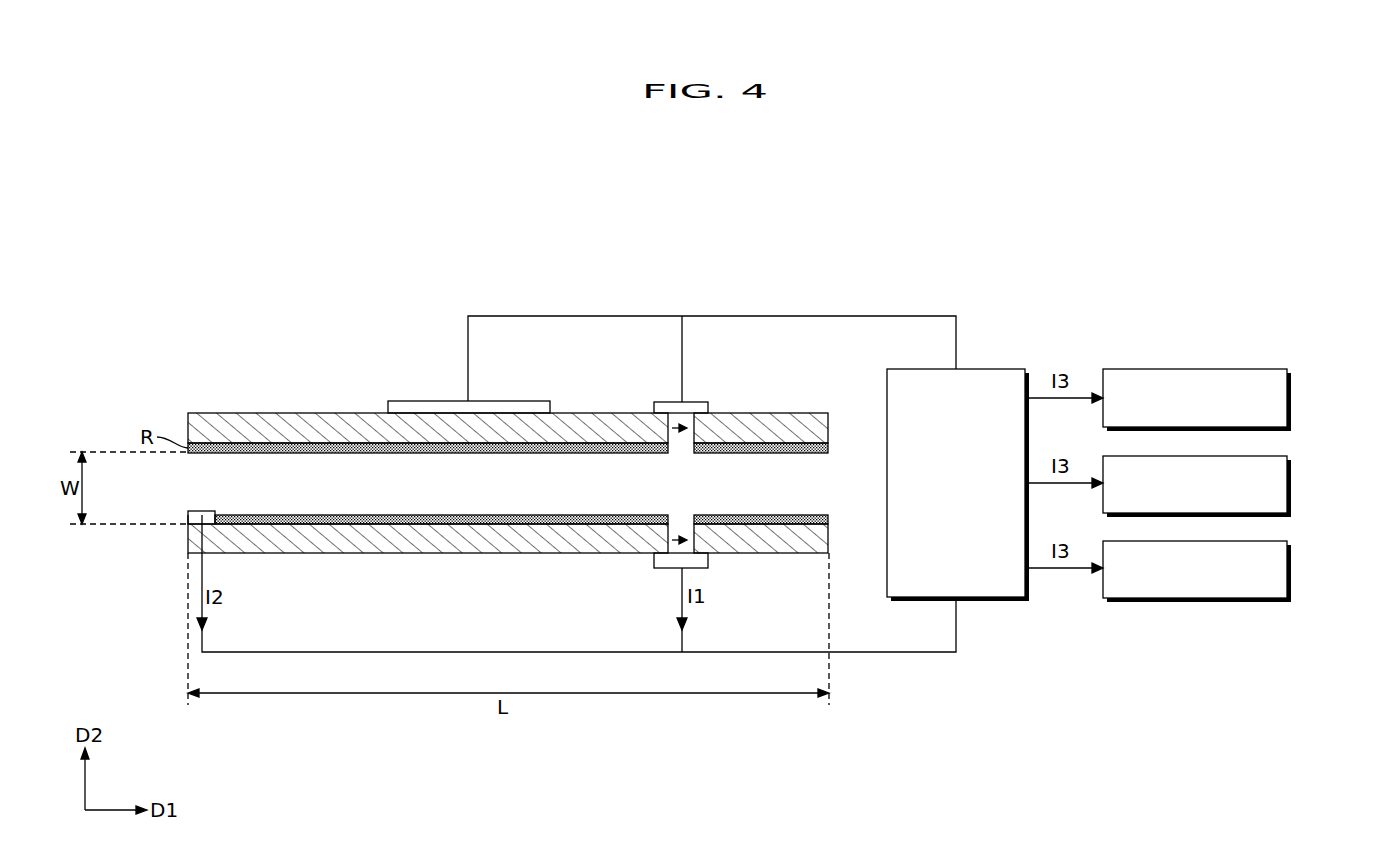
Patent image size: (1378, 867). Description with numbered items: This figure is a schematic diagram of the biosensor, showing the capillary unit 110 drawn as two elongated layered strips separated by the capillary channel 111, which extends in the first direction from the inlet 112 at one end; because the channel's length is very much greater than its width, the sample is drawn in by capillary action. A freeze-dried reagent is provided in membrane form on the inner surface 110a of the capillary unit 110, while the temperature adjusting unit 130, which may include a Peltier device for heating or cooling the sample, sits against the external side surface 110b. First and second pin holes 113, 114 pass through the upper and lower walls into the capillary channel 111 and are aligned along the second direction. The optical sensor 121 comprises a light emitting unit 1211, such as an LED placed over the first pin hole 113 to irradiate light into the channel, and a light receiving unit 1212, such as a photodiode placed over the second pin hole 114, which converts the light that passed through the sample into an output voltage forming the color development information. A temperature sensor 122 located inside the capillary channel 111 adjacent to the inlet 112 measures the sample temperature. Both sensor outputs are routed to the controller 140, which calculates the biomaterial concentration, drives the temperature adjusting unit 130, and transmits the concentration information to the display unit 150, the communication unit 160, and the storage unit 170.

The capillary unit 110 is at (506, 397).
The inner surface 110a is at (318, 455).
The external side surface 110b is at (205, 413).
The capillary channel 111 is at (376, 483).
The inlet 112 is at (194, 487).
The first pin hole 113 is at (672, 428).
The second pin hole 114 is at (672, 540).
The optical sensor 121 is at (736, 394).
The light emitting unit 1211 is at (700, 410).
The light receiving unit 1212 is at (704, 565).
The temperature sensor 122 is at (190, 520).
The temperature adjusting unit 130 is at (428, 405).
The controller 140 is at (994, 369).
The display unit 150 is at (1291, 398).
The communication unit 160 is at (1291, 484).
The storage unit 170 is at (1291, 569).